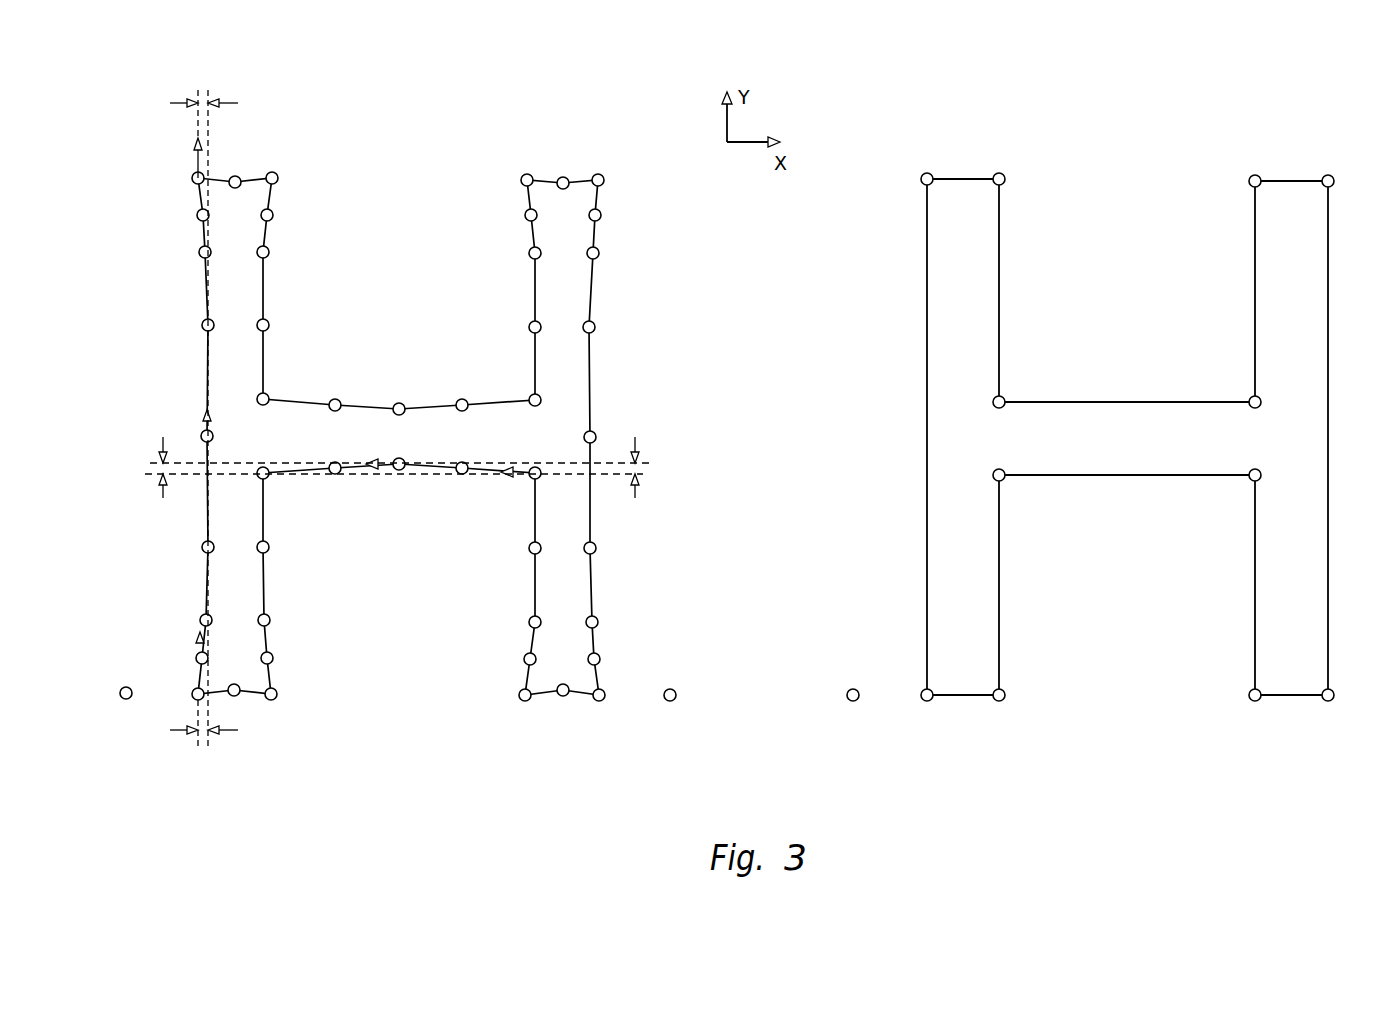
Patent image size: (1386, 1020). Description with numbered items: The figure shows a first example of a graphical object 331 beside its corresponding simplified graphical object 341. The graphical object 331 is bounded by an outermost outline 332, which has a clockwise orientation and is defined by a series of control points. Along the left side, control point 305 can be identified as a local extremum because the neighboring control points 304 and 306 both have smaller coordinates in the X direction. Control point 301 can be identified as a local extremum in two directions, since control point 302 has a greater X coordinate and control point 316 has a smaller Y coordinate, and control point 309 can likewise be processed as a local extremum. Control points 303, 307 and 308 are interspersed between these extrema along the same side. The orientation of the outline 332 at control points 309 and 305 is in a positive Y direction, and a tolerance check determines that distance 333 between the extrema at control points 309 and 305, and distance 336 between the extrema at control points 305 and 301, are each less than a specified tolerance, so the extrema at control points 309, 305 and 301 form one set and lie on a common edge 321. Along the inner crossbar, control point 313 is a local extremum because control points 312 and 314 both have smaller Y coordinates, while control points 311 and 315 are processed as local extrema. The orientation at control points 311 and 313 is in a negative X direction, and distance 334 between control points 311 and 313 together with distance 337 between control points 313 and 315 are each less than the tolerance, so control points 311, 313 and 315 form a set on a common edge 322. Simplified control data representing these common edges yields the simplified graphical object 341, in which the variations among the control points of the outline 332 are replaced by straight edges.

The control point 301 is at (194, 177).
The control point 302 is at (198, 214).
The control point 303 is at (200, 251).
The control point 304 is at (203, 324).
The control point 305 is at (202, 436).
The control point 306 is at (203, 546).
The control point 307 is at (201, 619).
The control point 308 is at (197, 657).
The control point 309 is at (194, 699).
The control point 311 is at (533, 479).
The control point 312 is at (463, 474).
The control point 313 is at (400, 470).
The control point 314 is at (334, 474).
The control point 315 is at (267, 479).
The control point 316 is at (236, 177).
The edge 321 is at (908, 180).
The edge 322 is at (1253, 480).
The graphical object 331 is at (402, 477).
The outline 332 is at (593, 287).
The distance 333 is at (204, 748).
The distance 334 is at (646, 465).
The distance 336 is at (204, 88).
The distance 337 is at (148, 465).
The simplified graphical object 341 is at (1081, 518).